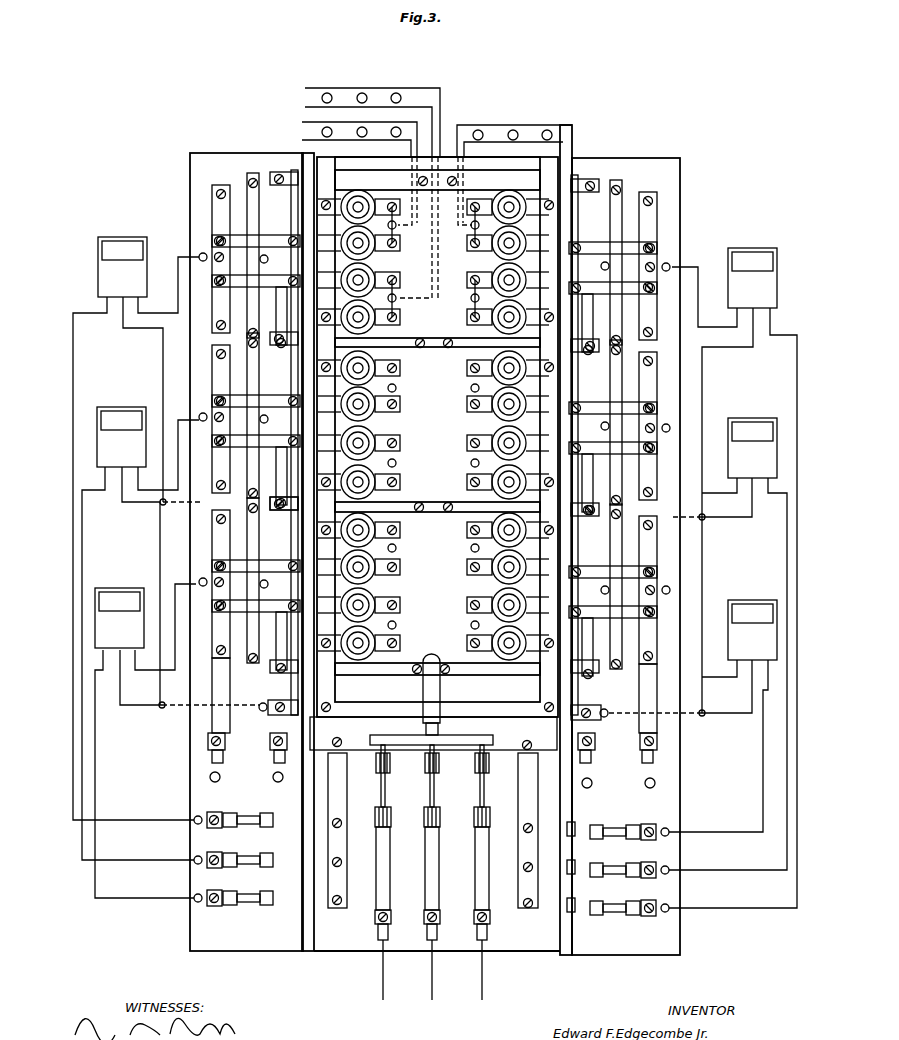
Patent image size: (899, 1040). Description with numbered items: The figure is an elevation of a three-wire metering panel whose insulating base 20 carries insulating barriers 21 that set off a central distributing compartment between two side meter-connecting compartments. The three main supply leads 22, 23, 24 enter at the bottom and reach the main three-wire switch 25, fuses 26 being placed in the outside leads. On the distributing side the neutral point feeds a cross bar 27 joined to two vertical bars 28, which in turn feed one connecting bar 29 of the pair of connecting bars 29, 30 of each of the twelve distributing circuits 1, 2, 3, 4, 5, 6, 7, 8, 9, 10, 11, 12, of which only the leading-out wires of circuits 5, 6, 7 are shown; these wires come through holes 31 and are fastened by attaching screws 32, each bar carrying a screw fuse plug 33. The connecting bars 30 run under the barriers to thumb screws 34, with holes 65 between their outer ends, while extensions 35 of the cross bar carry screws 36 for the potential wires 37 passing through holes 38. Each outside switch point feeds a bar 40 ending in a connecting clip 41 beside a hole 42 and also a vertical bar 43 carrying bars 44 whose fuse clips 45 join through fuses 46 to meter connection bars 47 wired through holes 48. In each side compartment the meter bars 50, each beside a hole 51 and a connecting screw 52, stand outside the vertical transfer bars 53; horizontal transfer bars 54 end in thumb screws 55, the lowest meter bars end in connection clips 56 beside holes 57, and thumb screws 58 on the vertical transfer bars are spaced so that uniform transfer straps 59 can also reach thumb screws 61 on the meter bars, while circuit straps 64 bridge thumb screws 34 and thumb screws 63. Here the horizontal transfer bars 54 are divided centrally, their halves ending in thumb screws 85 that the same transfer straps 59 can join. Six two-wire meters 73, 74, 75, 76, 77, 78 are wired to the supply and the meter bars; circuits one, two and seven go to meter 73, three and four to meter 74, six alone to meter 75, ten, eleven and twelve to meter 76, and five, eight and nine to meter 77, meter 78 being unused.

The distributing circuit 1 is at (384, 624).
The distributing circuit 2 is at (384, 547).
The distributing circuit 3 is at (384, 462).
The distributing circuit 4 is at (384, 387).
The distributing circuit 5 is at (372, 196).
The distributing circuit 6 is at (359, 177).
The distributing circuit 7 is at (514, 179).
The distributing circuit 8 is at (494, 298).
The distributing circuit 9 is at (494, 387).
The distributing circuit 10 is at (496, 462).
The distributing circuit 11 is at (496, 547).
The distributing circuit 12 is at (496, 624).
The insulating base 20 is at (272, 958).
The insulating barriers 21 is at (334, 958).
The main supply lead 22 is at (366, 1022).
The neutral lead 23 is at (431, 1022).
The main supply lead 24 is at (476, 607).
The main three-wire switch 25 is at (432, 872).
The fuses 26 is at (390, 855).
The cross bar 27 is at (445, 694).
The vertical bars 28 is at (385, 689).
The connecting bar 29 is at (433, 417).
The connecting bar 30 is at (437, 584).
The holes 31 is at (445, 418).
The attaching screws 32 is at (434, 259).
The screw fuse plug 33 is at (375, 432).
The thumb screws 34 is at (446, 426).
The extensions 35 is at (280, 715).
The screws 36 is at (492, 464).
The potential wires 37 is at (435, 582).
The holes 38 is at (430, 716).
The bar 40 is at (433, 733).
The connecting clip 41 is at (431, 791).
The hole 42 is at (435, 800).
The vertical bar 43 is at (433, 847).
The bars 44 is at (459, 881).
The fuse clips 45 is at (431, 840).
The fuses 46 is at (449, 868).
The meter connection bars 47 is at (449, 888).
The holes 48 is at (430, 858).
The meter bars 50 is at (212, 212).
The hole 51 is at (200, 256).
The connecting screw 52 is at (437, 434).
The vertical transfer bars 53 is at (252, 180).
The horizontal transfer bars 54 is at (590, 156).
The thumb screws 55 is at (436, 590).
The connection clips 56 is at (208, 757).
The holes 57 is at (210, 779).
The thumb screws 58 is at (436, 429).
The transfer straps 59 is at (268, 182).
The thumb screws 61 is at (220, 192).
The thumb screws 63 is at (443, 440).
The circuit straps 64 is at (434, 422).
The holes 65 is at (424, 414).
The two-wire meter 73 is at (119, 618).
The two-wire meter 74 is at (121, 437).
The two-wire meter 75 is at (122, 267).
The two-wire meter 76 is at (752, 630).
The two-wire meter 77 is at (752, 448).
The two-wire meter 78 is at (752, 278).
The thumb screws 85 is at (433, 407).